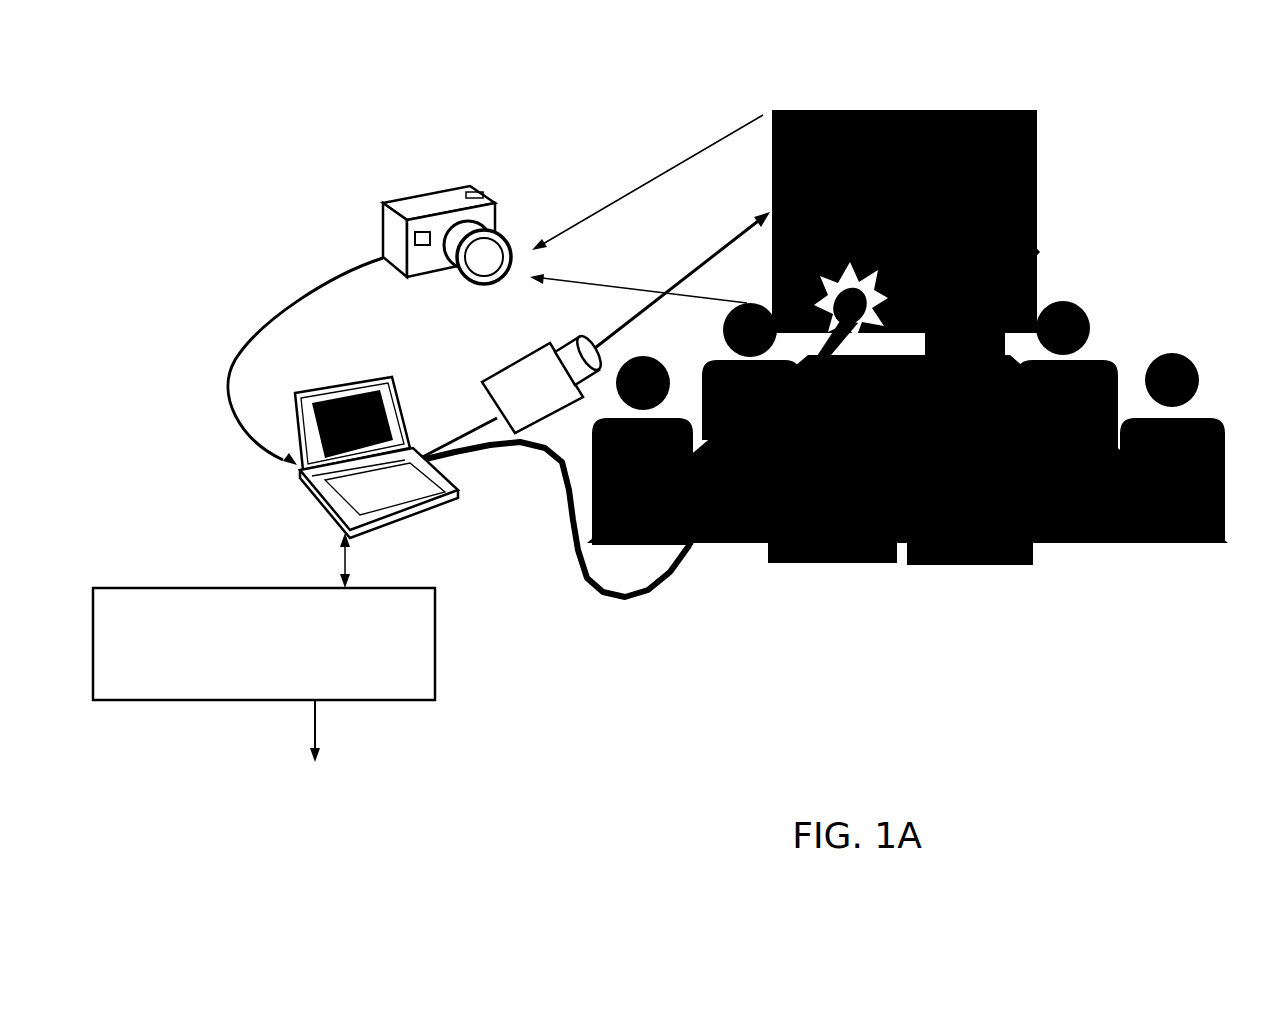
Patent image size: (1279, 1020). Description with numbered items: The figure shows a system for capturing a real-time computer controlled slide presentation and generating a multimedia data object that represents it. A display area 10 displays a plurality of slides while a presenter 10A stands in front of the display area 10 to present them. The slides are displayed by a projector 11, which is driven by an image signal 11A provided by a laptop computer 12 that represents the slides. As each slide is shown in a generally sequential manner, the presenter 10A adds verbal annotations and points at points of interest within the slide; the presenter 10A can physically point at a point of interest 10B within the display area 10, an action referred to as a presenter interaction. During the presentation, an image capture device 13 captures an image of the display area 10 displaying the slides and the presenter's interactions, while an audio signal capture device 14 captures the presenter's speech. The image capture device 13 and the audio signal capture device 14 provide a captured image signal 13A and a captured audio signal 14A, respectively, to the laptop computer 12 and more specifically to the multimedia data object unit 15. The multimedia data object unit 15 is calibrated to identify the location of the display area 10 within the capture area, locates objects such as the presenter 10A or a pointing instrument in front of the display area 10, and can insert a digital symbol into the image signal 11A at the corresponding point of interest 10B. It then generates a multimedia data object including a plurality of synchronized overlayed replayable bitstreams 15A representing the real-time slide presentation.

The display area 10 is at (1020, 108).
The presenter 10A is at (988, 166).
The point of interest 10B is at (813, 126).
The projector 11 is at (487, 366).
The image signal 11A is at (469, 421).
The laptop computer 12 is at (312, 512).
The image capture device 13 is at (436, 185).
The captured image signal 13A is at (247, 328).
The audio signal capture device 14 is at (834, 295).
The captured audio signal 14A is at (570, 565).
The multimedia data object unit 15 is at (264, 644).
The synchronized overlayed replayable bitstreams 15A is at (343, 731).